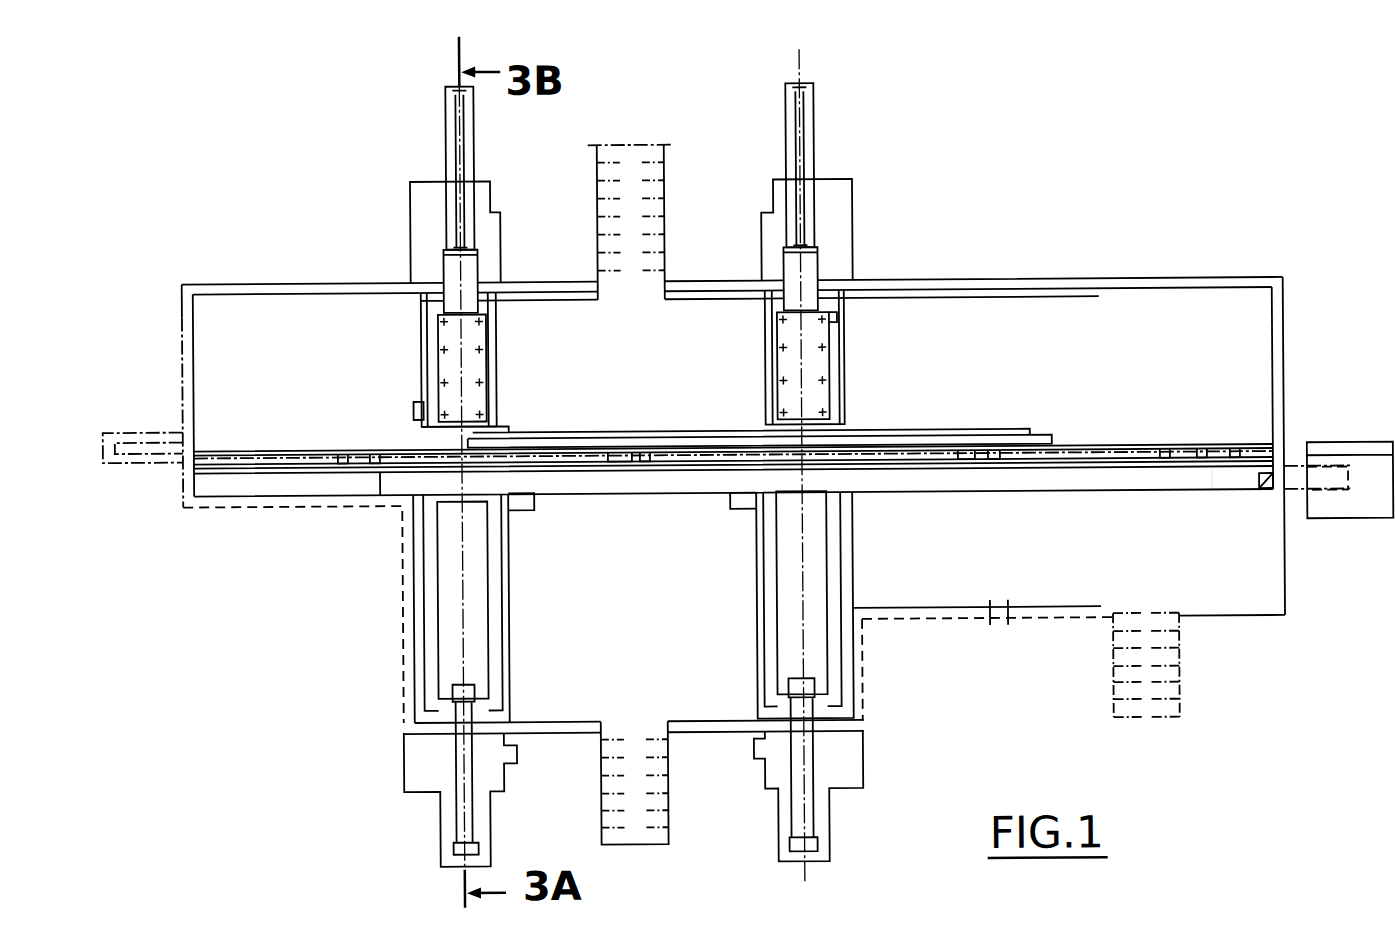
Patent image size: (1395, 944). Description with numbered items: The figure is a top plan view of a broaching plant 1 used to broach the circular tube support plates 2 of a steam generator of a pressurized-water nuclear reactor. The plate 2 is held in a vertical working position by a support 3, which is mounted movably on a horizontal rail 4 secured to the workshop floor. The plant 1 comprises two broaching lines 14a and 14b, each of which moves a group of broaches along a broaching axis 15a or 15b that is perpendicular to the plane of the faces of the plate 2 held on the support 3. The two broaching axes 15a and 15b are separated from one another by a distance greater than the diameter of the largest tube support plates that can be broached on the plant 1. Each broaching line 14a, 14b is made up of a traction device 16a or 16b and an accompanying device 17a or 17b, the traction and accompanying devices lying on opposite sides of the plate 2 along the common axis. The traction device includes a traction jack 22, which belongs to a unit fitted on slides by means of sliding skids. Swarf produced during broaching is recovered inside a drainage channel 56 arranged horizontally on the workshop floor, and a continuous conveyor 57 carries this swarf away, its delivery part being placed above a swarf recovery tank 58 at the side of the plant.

The broaching plant 1 is at (868, 213).
The tube support plate 2 is at (698, 468).
The support 3 is at (733, 455).
The horizontal rail 4 is at (317, 457).
The first broaching line 14a is at (427, 108).
The second broaching line 14b is at (840, 88).
The first broaching axis 15a is at (464, 60).
The second broaching axis 15b is at (803, 63).
The traction device 16a is at (449, 653).
The traction device 16b is at (812, 656).
The accompanying device 17a is at (469, 273).
The accompanying device 17b is at (813, 271).
The traction jack 22 is at (466, 808).
The drainage channel 56 is at (380, 478).
The continuous conveyor 57 is at (1213, 482).
The swarf recovery tank 58 is at (1367, 472).